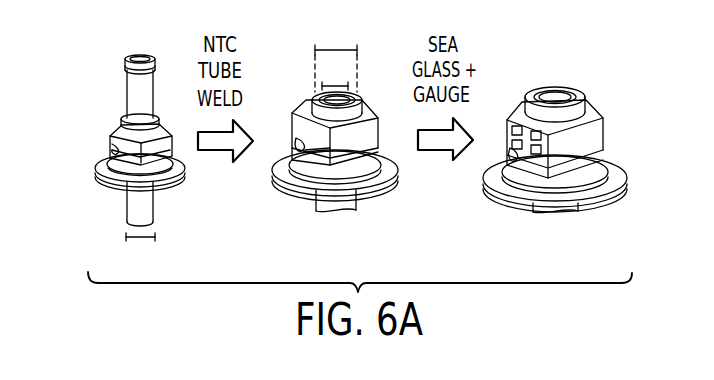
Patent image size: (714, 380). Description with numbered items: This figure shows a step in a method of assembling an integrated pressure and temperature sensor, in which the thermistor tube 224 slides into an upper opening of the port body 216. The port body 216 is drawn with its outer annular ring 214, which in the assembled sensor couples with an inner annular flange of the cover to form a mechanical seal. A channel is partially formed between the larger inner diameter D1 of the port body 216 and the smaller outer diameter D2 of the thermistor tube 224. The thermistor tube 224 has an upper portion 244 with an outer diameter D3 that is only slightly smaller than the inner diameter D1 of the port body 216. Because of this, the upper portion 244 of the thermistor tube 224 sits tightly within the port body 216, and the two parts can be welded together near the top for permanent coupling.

The upper portion 244 is at (136, 69).
The outer annular ring 214 is at (134, 92).
The port body 216 is at (116, 140).
The thermistor tube 224 is at (346, 199).
The inner diameter of the port body D1 is at (340, 50).
The outer diameter of the thermistor tube D2 is at (134, 239).
The outer diameter of the upper portion D3 is at (324, 84).